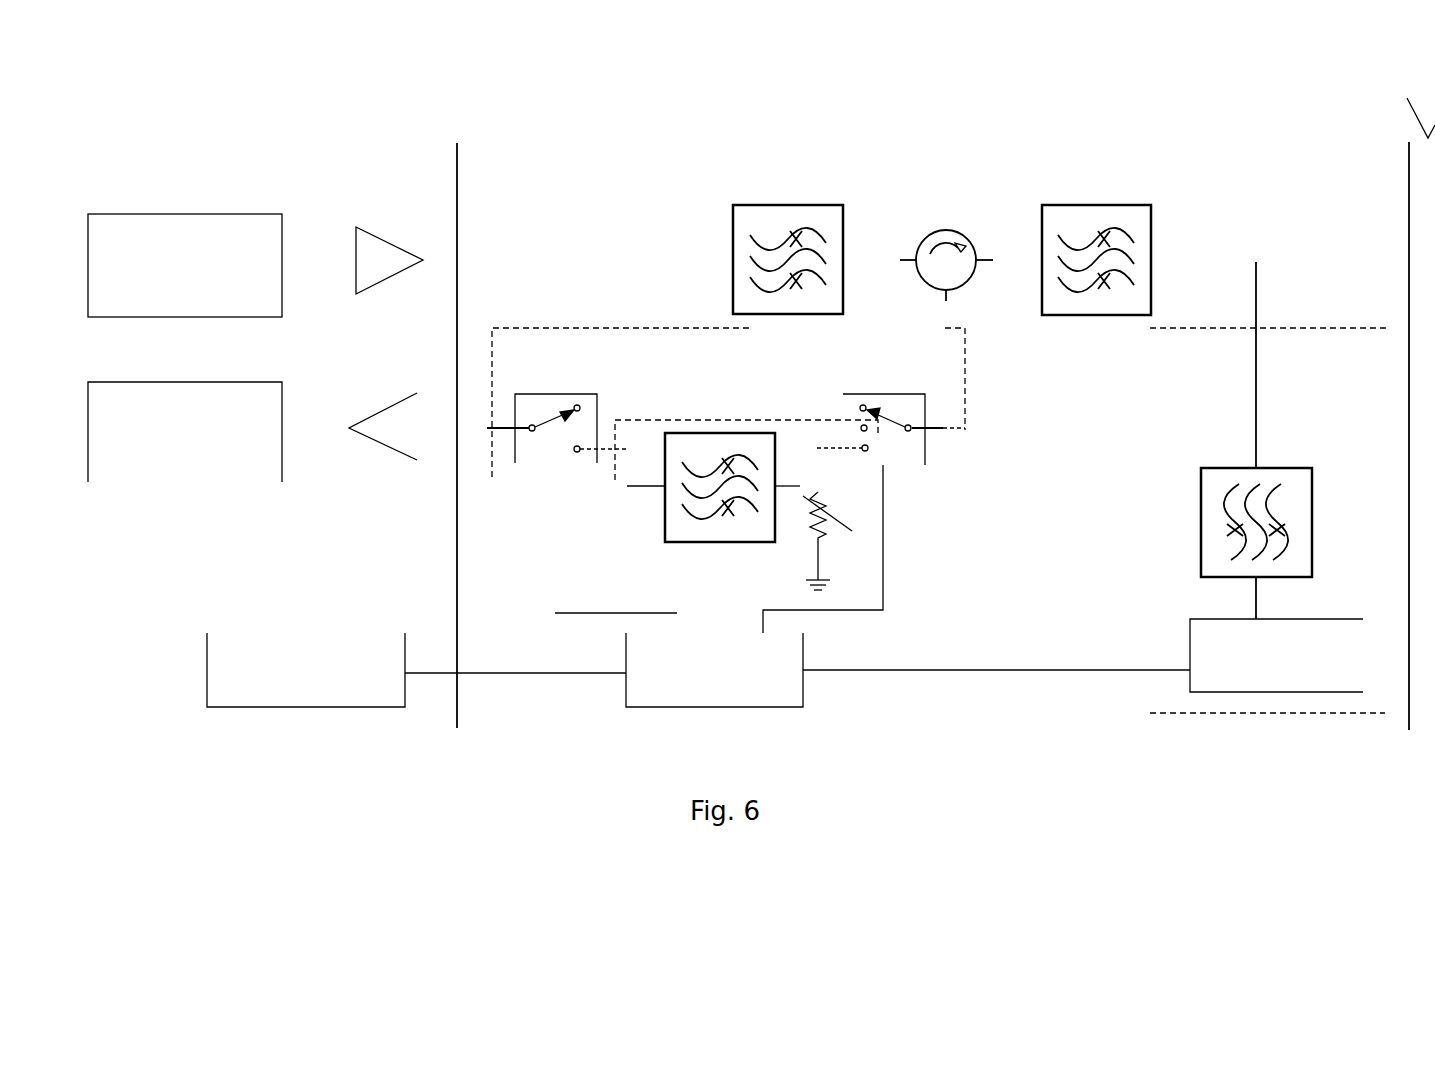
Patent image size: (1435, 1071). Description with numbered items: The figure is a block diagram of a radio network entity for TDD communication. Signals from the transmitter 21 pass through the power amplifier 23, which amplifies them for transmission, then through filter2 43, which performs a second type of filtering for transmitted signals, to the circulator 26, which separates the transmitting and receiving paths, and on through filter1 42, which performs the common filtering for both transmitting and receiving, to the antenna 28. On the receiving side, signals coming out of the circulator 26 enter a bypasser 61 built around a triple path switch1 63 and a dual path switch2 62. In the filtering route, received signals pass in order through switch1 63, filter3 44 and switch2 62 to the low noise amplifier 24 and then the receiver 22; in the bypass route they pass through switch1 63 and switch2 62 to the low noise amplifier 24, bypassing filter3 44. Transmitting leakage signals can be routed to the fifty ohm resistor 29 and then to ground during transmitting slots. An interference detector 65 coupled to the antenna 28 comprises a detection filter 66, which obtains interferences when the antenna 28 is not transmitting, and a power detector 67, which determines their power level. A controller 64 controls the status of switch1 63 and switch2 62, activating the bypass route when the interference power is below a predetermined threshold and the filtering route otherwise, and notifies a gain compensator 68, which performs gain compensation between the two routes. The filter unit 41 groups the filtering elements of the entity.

The transmitter 21 is at (192, 237).
The receiver 22 is at (185, 462).
The power amplifier 23 is at (407, 253).
The low noise amplifier 24 is at (362, 437).
The circulator 26 is at (962, 265).
The antenna 28 is at (1410, 120).
The 50 ohm resistor 29 is at (843, 549).
The filter unit 41 is at (457, 163).
The filter1 42 is at (1153, 215).
The filter2 43 is at (732, 224).
The filter3 44 is at (663, 517).
The bypasser 61 is at (588, 327).
The switch2 62 is at (583, 412).
The switch1 63 is at (840, 403).
The controller 64 is at (797, 665).
The interference detector 65 is at (1152, 398).
The detection filter 66 is at (1260, 440).
The power detector 67 is at (1257, 637).
The gain compensator 68 is at (306, 643).